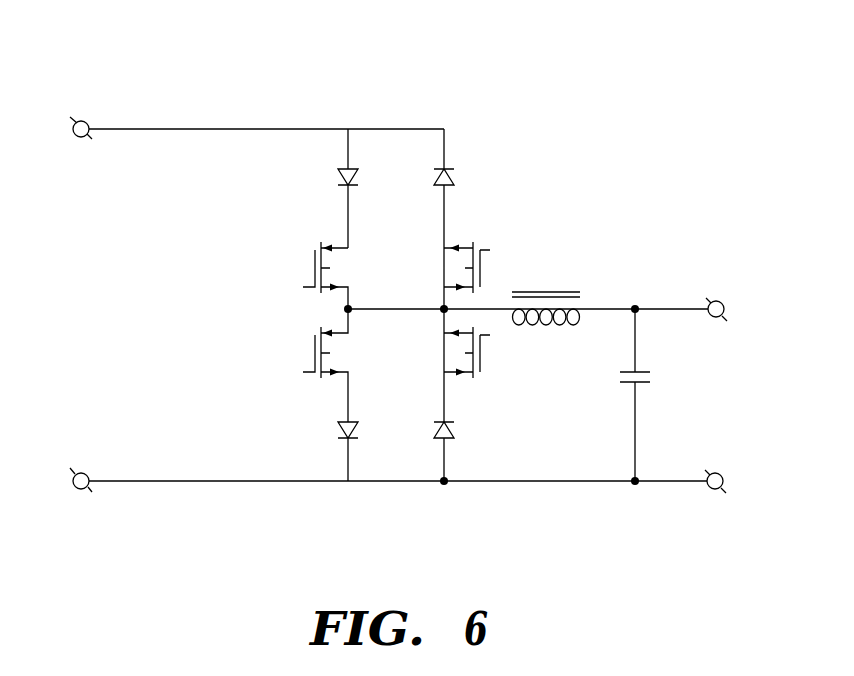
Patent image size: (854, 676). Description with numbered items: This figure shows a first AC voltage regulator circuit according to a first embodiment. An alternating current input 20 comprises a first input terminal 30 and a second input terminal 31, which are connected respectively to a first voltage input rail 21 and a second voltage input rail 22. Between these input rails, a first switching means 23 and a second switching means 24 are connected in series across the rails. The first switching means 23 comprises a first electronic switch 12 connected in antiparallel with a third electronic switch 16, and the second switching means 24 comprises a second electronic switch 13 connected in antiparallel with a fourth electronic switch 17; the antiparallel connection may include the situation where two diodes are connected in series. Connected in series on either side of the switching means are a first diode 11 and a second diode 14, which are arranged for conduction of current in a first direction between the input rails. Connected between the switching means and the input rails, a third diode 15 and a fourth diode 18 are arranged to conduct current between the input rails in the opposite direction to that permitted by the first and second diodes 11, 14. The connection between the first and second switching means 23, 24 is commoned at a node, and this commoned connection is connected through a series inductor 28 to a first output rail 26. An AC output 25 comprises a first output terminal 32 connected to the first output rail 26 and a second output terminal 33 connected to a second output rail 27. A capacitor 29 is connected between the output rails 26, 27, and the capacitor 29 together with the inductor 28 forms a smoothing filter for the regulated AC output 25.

The first diode 11 is at (333, 188).
The first electronic switch 12 is at (318, 275).
The second electronic switch 13 is at (318, 365).
The second diode 14 is at (332, 449).
The third diode 15 is at (431, 159).
The third electronic switch 16 is at (454, 247).
The fourth electronic switch 17 is at (454, 365).
The fourth diode 18 is at (431, 449).
The alternating current input 20 is at (98, 326).
The first voltage input rail 21 is at (131, 129).
The second voltage input rail 22 is at (133, 481).
The first switching means 23 is at (371, 232).
The second switching means 24 is at (371, 402).
The AC output 25 is at (751, 432).
The first output rail 26 is at (662, 309).
The second output rail 27 is at (662, 482).
The series inductor 28 is at (546, 291).
The capacitor 29 is at (602, 378).
The first input terminal 30 is at (78, 121).
The second input terminal 31 is at (80, 489).
The first output terminal 32 is at (717, 301).
The second output terminal 33 is at (716, 489).